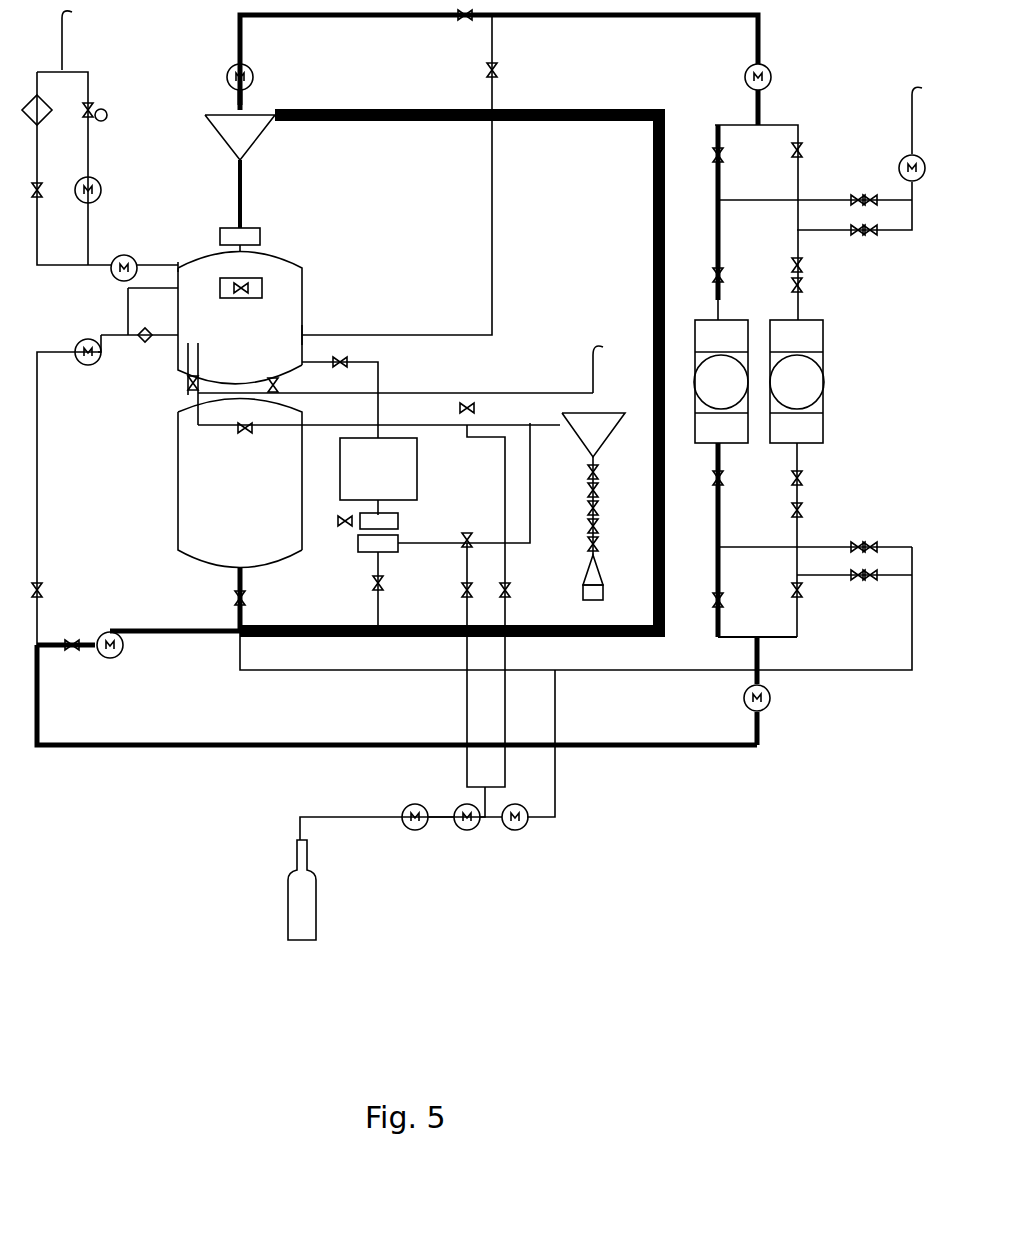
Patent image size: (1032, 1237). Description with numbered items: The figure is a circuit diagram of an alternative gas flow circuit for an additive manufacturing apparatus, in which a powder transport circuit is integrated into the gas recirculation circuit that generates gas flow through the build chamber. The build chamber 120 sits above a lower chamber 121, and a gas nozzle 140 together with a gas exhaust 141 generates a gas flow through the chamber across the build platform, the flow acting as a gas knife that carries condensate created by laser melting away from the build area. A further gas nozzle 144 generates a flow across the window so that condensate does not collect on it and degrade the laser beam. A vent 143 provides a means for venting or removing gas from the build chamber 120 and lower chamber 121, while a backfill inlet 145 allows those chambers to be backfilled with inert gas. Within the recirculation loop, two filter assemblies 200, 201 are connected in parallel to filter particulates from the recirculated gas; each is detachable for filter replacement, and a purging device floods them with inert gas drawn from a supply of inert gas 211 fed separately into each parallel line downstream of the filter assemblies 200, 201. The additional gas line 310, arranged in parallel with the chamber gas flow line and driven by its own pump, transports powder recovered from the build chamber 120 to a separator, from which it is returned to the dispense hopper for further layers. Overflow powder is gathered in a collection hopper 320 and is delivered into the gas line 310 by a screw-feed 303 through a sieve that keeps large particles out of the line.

The build chamber 120 is at (240, 318).
The lower chamber 121 is at (240, 483).
The gas nozzle 140 is at (178, 328).
The gas exhaust 141 is at (305, 335).
The vent 143 is at (178, 266).
The further gas nozzle 144 is at (262, 285).
The backfill inlet 145 is at (236, 568).
The filter assembly 200 is at (755, 338).
The filter assembly 201 is at (834, 405).
The supply of inert gas 211 is at (303, 905).
The screw-feed 303 is at (375, 518).
The gas line 310 is at (655, 295).
The collection hopper 320 is at (378, 469).